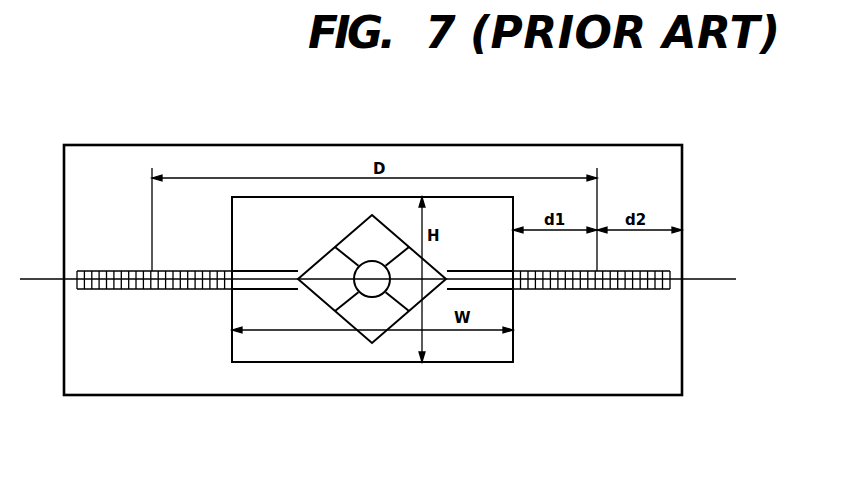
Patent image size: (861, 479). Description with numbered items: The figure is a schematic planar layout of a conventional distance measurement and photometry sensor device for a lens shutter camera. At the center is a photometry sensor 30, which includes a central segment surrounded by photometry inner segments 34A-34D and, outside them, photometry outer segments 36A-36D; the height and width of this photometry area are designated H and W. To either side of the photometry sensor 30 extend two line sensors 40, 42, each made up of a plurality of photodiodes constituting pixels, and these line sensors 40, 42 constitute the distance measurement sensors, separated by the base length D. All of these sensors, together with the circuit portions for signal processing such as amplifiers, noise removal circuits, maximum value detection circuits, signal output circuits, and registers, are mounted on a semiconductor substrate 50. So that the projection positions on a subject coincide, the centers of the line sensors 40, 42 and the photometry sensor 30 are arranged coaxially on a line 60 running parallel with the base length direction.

The photometry sensor 30 is at (317, 197).
The photometry inner segments 34A-34D is at (327, 281).
The photometry outer segments 36A-36D is at (464, 210).
The line sensor 40 is at (116, 292).
The line sensor 42 is at (590, 292).
The semiconductor substrate 50 is at (316, 375).
The line 60 is at (723, 279).